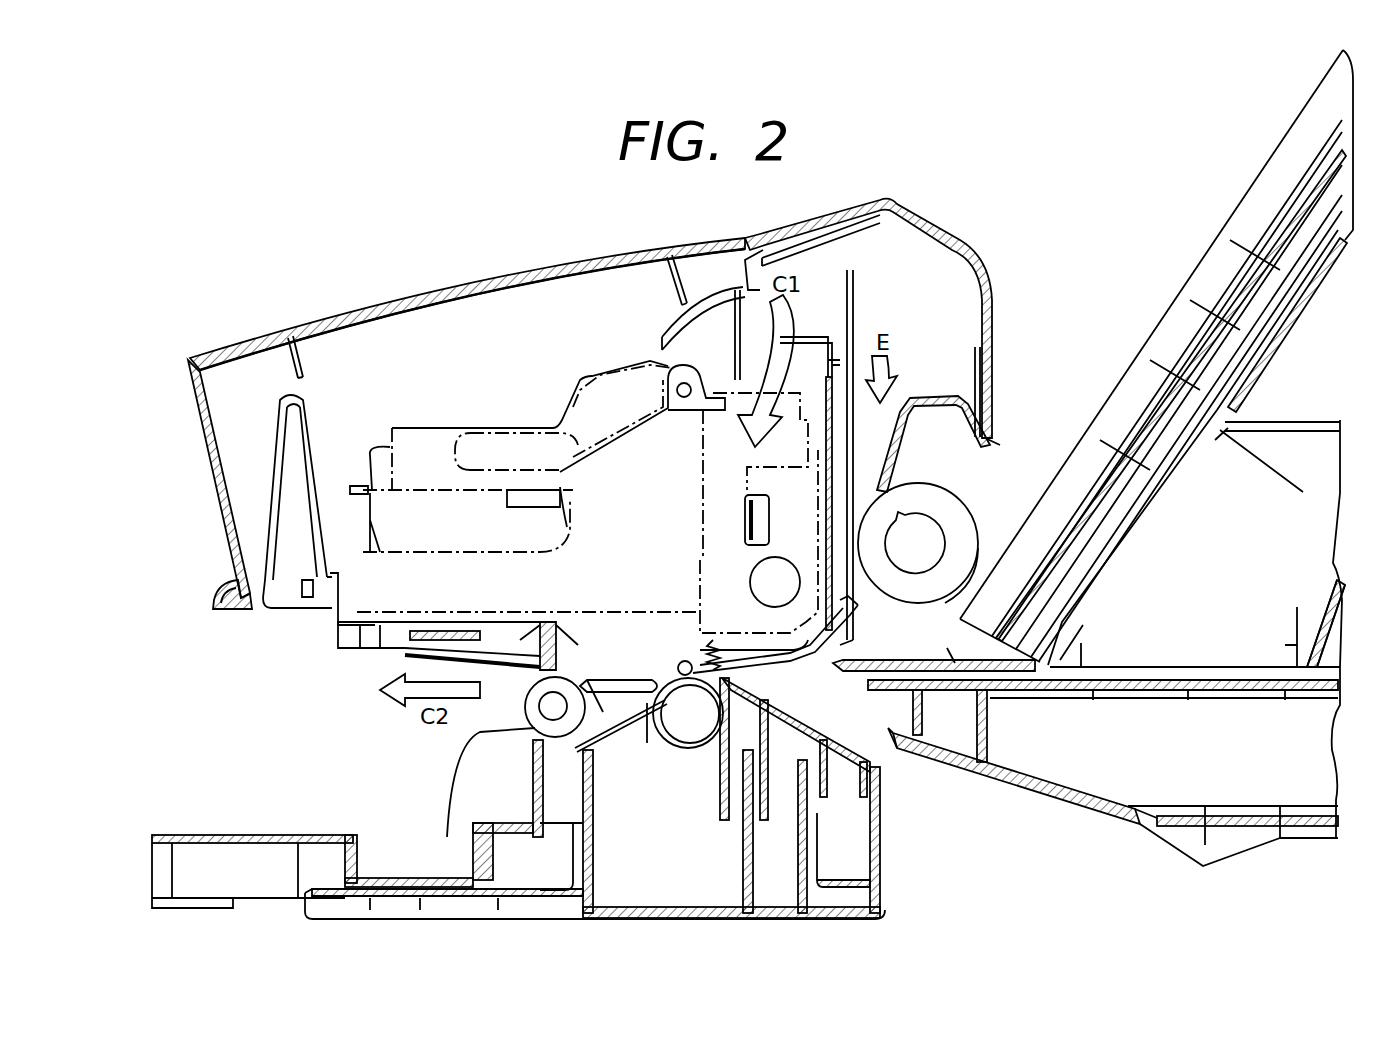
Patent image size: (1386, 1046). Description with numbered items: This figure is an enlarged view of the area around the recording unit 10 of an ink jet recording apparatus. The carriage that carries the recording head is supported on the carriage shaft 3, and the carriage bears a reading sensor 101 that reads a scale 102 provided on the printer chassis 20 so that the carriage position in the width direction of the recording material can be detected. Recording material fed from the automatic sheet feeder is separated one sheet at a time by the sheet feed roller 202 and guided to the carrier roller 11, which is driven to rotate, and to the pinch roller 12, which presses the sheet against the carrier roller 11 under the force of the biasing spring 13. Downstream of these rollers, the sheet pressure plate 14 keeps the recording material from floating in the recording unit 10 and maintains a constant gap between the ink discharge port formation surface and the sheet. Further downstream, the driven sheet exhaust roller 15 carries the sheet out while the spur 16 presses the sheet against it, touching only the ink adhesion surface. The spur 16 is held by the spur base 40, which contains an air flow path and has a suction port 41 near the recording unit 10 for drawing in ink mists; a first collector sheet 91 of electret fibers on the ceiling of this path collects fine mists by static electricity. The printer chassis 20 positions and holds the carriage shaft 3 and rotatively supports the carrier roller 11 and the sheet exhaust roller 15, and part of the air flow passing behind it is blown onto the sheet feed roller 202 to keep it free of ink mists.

The carriage shaft 3 is at (778, 570).
The recording unit 10 is at (623, 684).
The carrier roller 11 is at (685, 730).
The pinch roller 12 is at (672, 725).
The biasing spring 13 is at (708, 745).
The sheet pressure plate 14 is at (652, 655).
The sheet exhaust roller 15 is at (540, 720).
The spur 16 is at (548, 655).
The printer chassis 20 is at (820, 337).
The spur base 40 is at (425, 655).
The suction port 41 is at (532, 712).
The first collector sheet 91 is at (432, 633).
The reading sensor 101 is at (755, 500).
The scale 102 is at (748, 522).
The sheet feed roller 202 is at (950, 508).